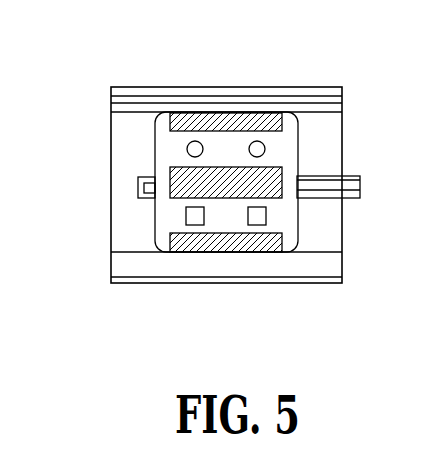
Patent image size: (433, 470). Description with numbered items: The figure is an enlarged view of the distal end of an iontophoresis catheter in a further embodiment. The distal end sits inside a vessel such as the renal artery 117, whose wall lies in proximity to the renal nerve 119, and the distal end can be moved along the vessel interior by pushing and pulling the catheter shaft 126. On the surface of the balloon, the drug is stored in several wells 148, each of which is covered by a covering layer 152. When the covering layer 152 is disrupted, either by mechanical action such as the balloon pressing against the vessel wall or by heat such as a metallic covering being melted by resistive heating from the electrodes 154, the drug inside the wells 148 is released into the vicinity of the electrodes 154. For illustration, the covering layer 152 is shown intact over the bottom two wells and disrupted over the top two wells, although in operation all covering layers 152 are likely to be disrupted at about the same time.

The renal artery 117 is at (137, 285).
The renal nerve 119 is at (111, 97).
The catheter shaft 126 is at (348, 177).
The wells 148 is at (187, 149).
The covering layer 152 is at (186, 215).
The electrodes 154 is at (230, 120).